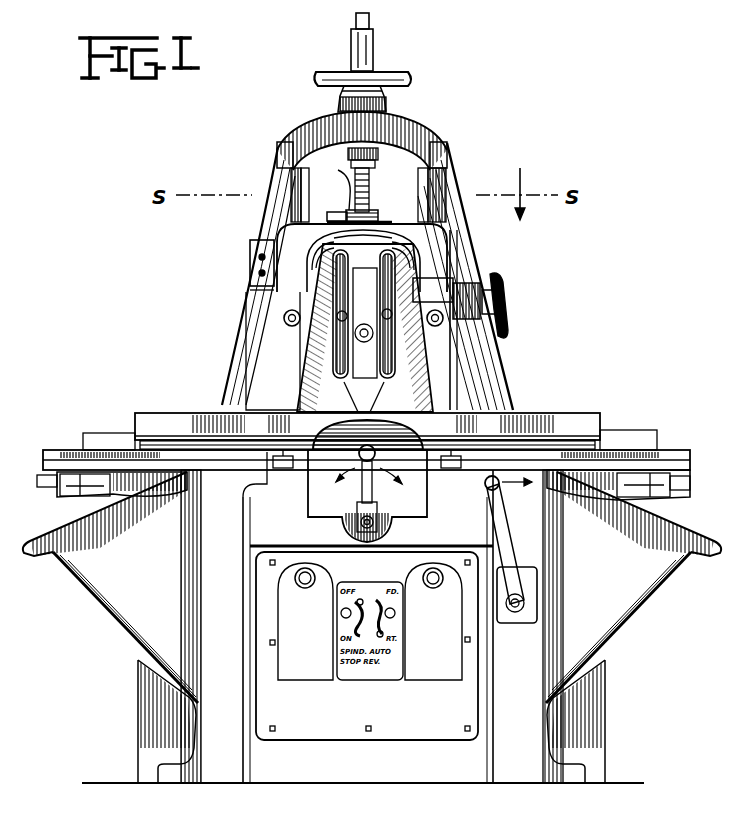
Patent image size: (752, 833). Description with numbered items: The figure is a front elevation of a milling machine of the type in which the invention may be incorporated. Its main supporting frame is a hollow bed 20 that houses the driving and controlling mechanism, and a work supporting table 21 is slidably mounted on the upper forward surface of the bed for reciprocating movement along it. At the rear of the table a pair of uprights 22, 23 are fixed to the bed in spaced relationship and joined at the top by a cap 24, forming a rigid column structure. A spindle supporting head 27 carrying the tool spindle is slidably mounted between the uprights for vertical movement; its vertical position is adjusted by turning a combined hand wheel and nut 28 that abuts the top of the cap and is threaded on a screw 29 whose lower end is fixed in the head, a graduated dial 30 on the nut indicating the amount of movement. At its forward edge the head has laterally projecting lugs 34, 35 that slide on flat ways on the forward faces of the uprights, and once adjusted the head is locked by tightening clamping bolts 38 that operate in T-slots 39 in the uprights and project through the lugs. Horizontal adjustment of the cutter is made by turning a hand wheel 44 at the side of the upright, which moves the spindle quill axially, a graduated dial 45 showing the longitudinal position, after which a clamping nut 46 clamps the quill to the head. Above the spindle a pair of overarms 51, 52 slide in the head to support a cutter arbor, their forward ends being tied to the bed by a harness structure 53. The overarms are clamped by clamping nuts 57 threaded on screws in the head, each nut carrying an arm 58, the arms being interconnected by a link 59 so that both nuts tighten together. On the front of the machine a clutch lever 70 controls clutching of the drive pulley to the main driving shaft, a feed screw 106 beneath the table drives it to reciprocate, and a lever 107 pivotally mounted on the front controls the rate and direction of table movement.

The bed 20 is at (552, 738).
The work supporting table 21 is at (580, 412).
The upright 22 is at (270, 190).
The upright 23 is at (464, 192).
The cap 24 is at (404, 120).
The spindle supporting head 27 is at (290, 358).
The combined hand wheel and nut 28 is at (398, 76).
The screw 29 is at (372, 196).
The graduated dial 30 is at (338, 106).
The lug 34 is at (280, 324).
The lug 35 is at (458, 258).
The clamping bolt 38 is at (292, 310).
The T-slot 39 is at (294, 198).
The hand wheel 44 is at (508, 296).
The graduated dial 45 is at (490, 282).
The clamping nut 46 is at (462, 284).
The overarm 51 is at (322, 256).
The overarm 52 is at (410, 256).
The harness structure 53 is at (432, 380).
The clamping nut 57 is at (333, 186).
The arm 58 is at (380, 220).
The link 59 is at (332, 212).
The clutch lever 70 is at (493, 480).
The feed screw 106 is at (126, 496).
The lever 107 is at (360, 486).